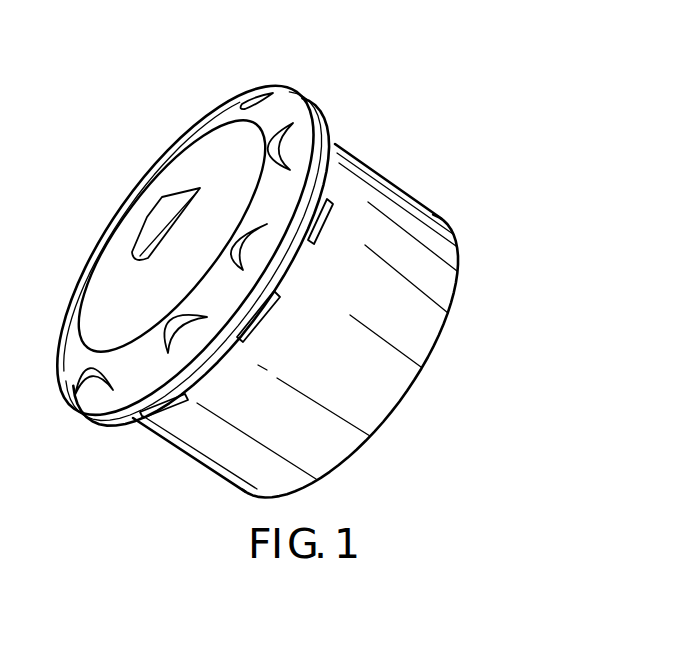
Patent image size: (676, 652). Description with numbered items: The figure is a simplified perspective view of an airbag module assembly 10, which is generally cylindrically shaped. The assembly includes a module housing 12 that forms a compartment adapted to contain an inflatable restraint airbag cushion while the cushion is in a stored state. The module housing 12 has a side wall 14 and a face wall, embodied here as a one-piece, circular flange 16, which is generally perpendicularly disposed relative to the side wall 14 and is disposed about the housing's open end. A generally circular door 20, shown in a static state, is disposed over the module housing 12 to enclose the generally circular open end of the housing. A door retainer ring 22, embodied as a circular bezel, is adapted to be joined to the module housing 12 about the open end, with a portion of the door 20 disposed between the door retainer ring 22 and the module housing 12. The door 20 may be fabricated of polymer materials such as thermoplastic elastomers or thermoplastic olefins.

The airbag module assembly 10 is at (474, 163).
The module housing 12 is at (475, 219).
The side wall 14 is at (187, 448).
The circular flange 16 is at (332, 128).
The door 20 is at (176, 147).
The door retainer ring 22 is at (298, 80).